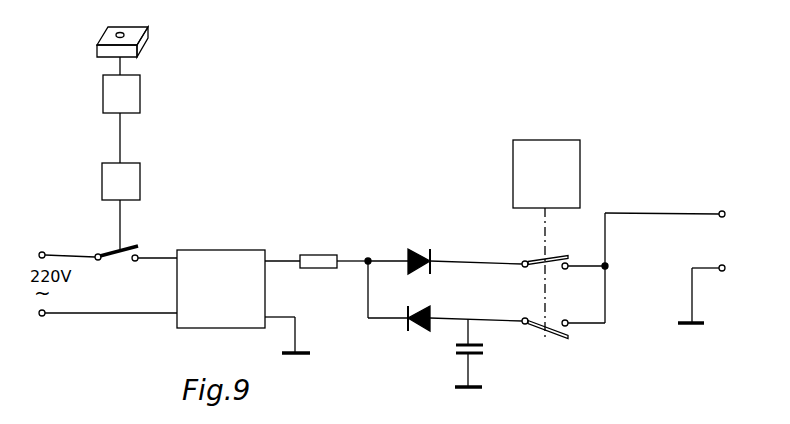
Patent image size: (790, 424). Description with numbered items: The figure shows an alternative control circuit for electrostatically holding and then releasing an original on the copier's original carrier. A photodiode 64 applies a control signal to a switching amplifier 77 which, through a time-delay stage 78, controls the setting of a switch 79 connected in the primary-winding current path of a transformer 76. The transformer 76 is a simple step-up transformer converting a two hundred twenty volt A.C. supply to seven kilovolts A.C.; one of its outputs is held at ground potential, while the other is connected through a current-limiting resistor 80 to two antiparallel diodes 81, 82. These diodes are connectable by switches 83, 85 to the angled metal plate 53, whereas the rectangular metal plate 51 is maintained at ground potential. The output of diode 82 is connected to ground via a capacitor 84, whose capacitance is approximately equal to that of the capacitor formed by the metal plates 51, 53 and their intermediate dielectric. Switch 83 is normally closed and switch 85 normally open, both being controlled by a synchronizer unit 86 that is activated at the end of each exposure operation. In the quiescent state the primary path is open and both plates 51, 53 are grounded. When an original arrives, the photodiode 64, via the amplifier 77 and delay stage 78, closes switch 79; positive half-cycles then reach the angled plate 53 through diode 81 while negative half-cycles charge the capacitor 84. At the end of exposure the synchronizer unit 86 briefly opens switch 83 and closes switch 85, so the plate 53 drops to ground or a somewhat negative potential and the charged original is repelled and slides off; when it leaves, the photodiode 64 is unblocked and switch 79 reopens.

The photodiode 64 is at (124, 35).
The switching amplifier 77 is at (135, 93).
The time-delay stage 78 is at (135, 177).
The switch 79 is at (113, 250).
The transformer 76 is at (208, 263).
The current-limiting resistor 80 is at (317, 255).
The diode 81 is at (400, 260).
The diode 82 is at (400, 326).
The switch 83 is at (555, 262).
The capacitor 84 is at (473, 342).
The switch 85 is at (557, 340).
The synchronizer unit 86 is at (525, 163).
The angled member 53 is at (681, 215).
The metal plate 51 is at (716, 290).